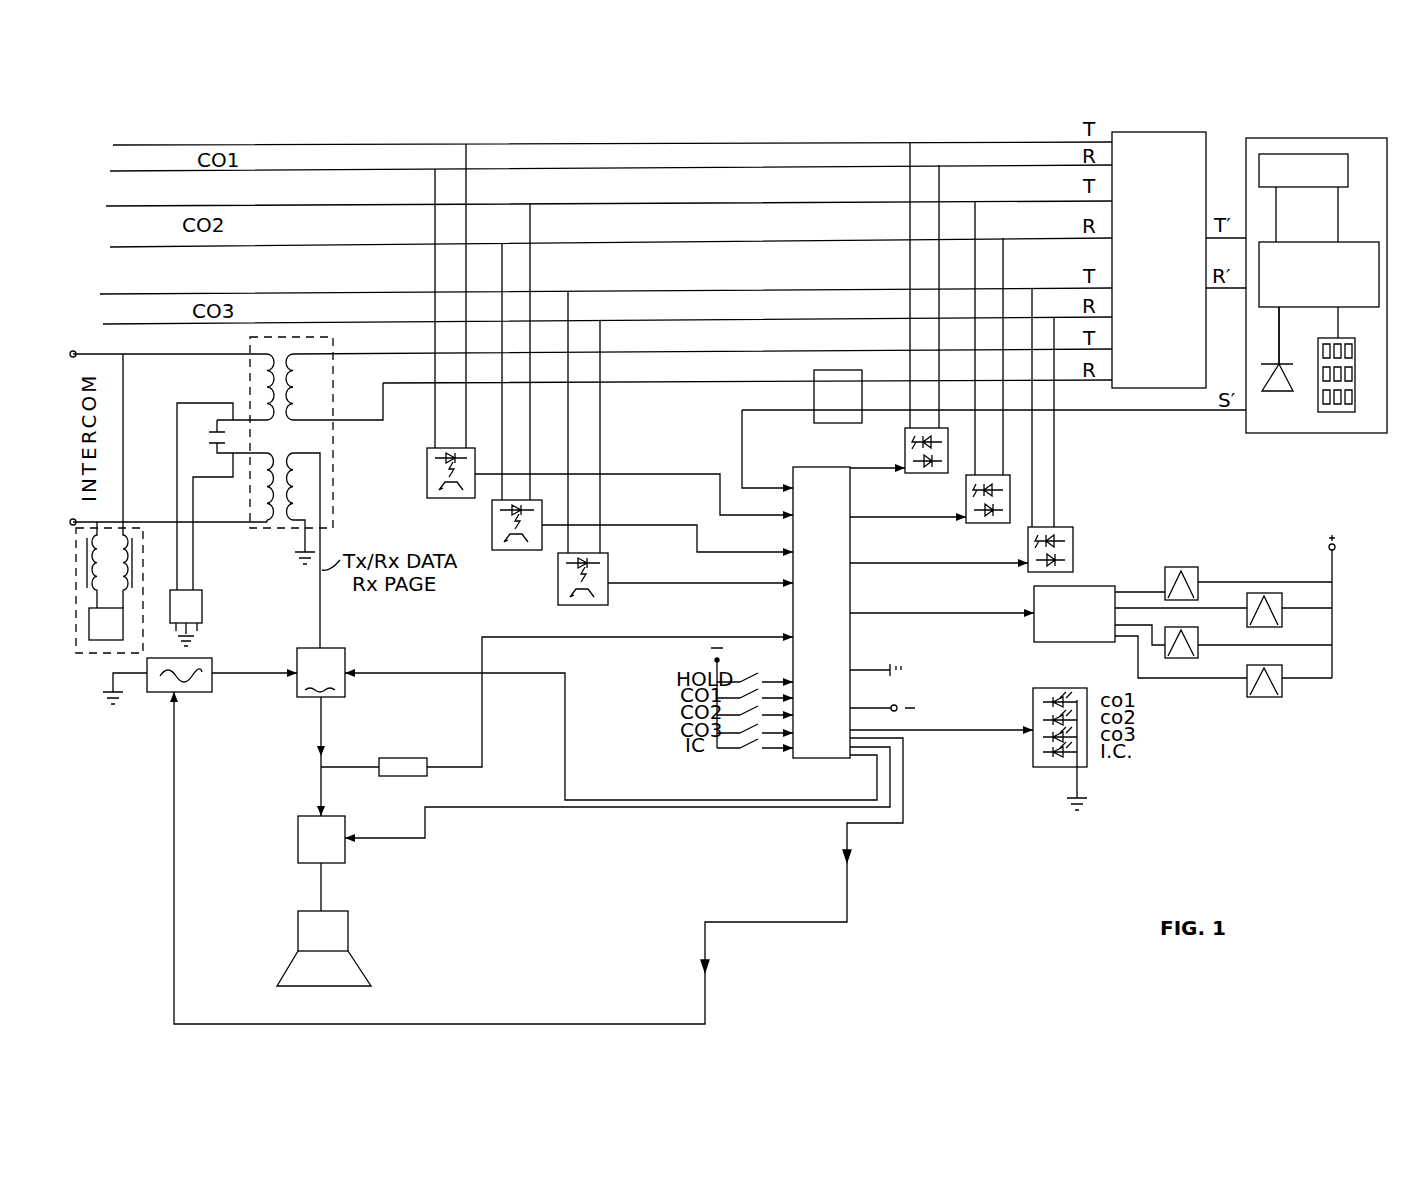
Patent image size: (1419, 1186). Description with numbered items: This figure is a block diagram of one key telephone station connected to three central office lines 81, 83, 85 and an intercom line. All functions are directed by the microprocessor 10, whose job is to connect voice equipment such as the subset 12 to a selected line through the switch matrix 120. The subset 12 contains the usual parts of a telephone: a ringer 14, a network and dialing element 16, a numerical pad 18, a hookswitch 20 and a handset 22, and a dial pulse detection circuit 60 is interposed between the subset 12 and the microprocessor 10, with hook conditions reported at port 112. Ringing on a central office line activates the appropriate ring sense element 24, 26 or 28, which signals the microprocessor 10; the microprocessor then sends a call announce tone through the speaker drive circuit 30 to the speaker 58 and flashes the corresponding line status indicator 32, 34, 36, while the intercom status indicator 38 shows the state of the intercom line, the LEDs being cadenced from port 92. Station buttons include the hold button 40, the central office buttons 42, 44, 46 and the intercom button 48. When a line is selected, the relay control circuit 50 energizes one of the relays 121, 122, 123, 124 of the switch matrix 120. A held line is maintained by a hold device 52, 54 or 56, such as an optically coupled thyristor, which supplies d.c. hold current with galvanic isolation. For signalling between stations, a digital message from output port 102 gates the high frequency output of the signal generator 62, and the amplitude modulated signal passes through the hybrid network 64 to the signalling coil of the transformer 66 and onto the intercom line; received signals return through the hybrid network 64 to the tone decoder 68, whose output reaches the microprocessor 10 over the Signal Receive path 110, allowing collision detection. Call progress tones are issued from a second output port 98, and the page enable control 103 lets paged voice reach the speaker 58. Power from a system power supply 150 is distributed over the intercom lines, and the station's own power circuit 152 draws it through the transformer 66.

The microprocessor 10 is at (850, 633).
The subset 12 is at (1316, 426).
The ringer 14 is at (1294, 189).
The network and dialing element 16 is at (1353, 248).
The numerical pad 18 is at (1355, 356).
The hookswitch 20 is at (1287, 394).
The handset 22 is at (1285, 362).
The ring sense element 24 is at (452, 492).
The ring sense element 26 is at (515, 550).
The ring sense element 28 is at (600, 556).
The speaker drive circuit 30 is at (345, 848).
The C.O. line status indicator 32 is at (1063, 697).
The C.O. line status indicator 34 is at (1058, 716).
The C.O. line status indicator 36 is at (1050, 735).
The I.C. status indicator 38 is at (1060, 762).
The hold button 40 is at (739, 681).
The C.O. button 42 is at (749, 698).
The C.O. button 44 is at (745, 748).
The C.O. button 46 is at (800, 733).
The I.C. button 48 is at (752, 750).
The relay control circuit 50 is at (1040, 603).
The hold device 52 is at (905, 432).
The hold device 54 is at (966, 490).
The hold device 56 is at (1073, 528).
The speaker 58 is at (340, 940).
The dial pulse detection circuit 60 is at (828, 378).
The signal generator 62 is at (200, 690).
The hybrid network 64 is at (346, 686).
The transformer 66 is at (338, 518).
The tone decoder 68 is at (436, 788).
The central office line 81 is at (613, 476).
The central office line 83 is at (628, 527).
The central office line 85 is at (605, 584).
The port 92 is at (918, 724).
The second output port 98 is at (566, 786).
The output port 102 is at (772, 921).
The page enable control 103 is at (657, 806).
The Signal Receive (SIG Rx) path 110 is at (777, 636).
The port 112 is at (700, 430).
The switch matrix 120 is at (1173, 308).
The relay 121 is at (1184, 567).
The relay 122 is at (1270, 594).
The relay 123 is at (1192, 630).
The relay 124 is at (1281, 712).
The power supply 150 is at (90, 656).
The power circuit 152 is at (202, 607).